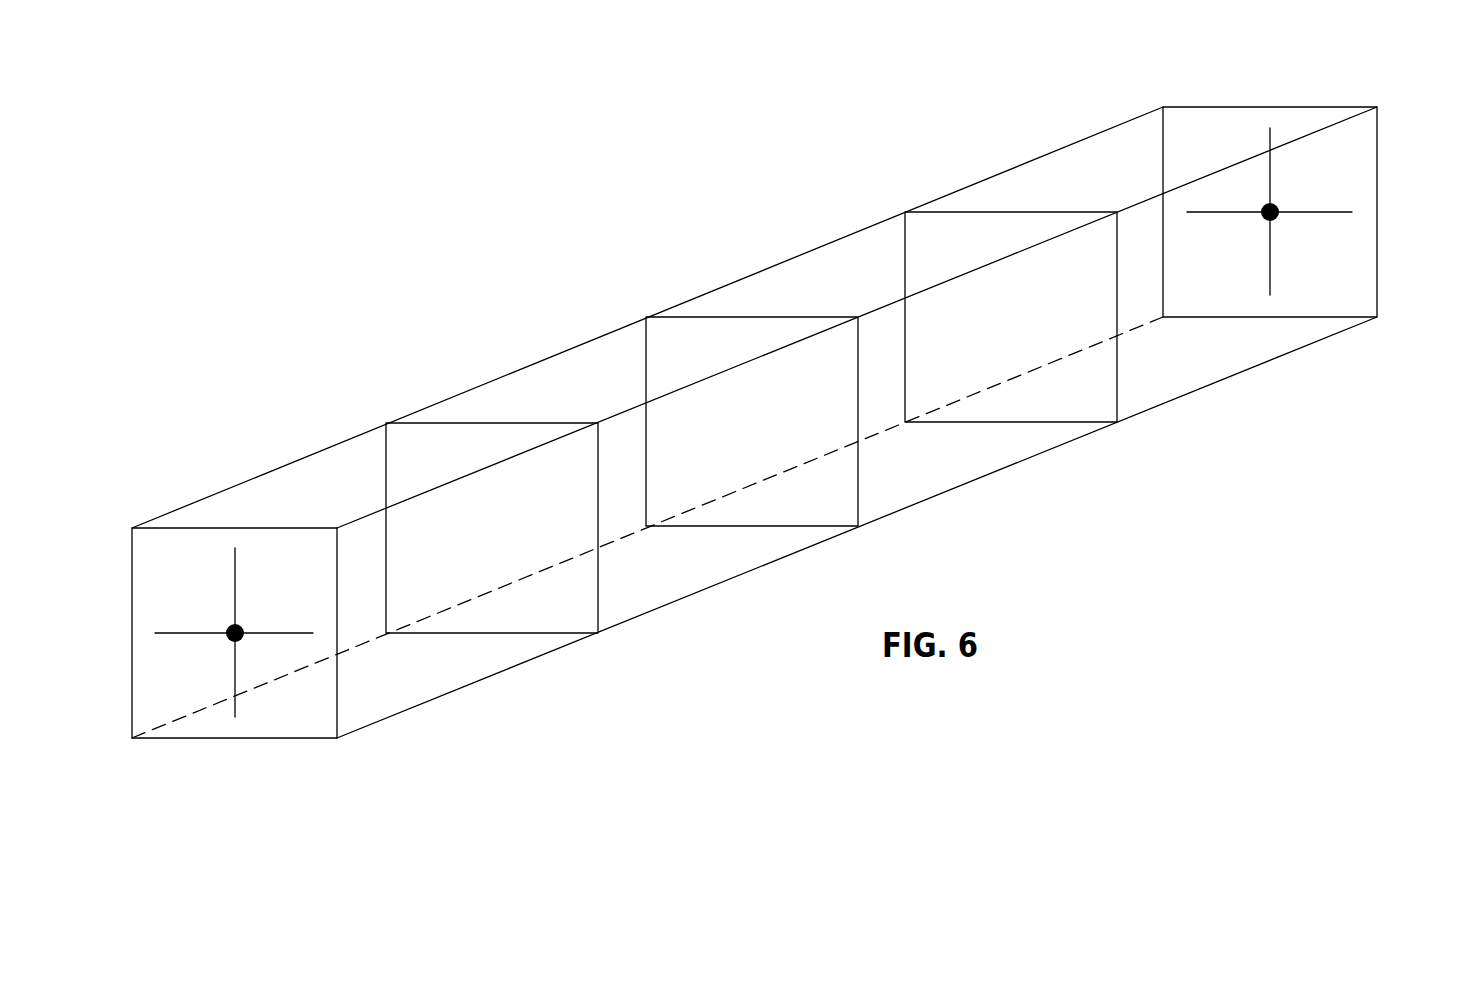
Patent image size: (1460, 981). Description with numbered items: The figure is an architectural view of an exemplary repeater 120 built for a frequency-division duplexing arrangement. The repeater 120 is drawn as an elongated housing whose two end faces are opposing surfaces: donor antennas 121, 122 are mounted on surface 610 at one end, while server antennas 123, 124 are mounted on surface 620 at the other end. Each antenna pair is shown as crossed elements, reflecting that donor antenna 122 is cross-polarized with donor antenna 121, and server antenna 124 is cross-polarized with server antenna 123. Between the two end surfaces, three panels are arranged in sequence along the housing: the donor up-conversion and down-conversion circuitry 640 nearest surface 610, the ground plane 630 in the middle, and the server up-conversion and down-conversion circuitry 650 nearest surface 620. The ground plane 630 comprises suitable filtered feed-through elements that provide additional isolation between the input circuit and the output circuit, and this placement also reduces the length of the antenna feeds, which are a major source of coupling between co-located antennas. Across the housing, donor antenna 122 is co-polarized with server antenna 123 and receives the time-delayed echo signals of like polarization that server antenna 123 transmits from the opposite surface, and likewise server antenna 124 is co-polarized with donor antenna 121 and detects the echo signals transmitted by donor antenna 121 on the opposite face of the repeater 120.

The repeater 120 is at (758, 268).
The donor antenna 121 is at (192, 634).
The donor antenna 122 is at (235, 568).
The server antenna 123 is at (1272, 273).
The server antenna 124 is at (1330, 212).
The surface 610 is at (285, 740).
The surface 620 is at (1272, 106).
The ground plane 630 is at (858, 493).
The donor up-conversion and down-conversion circuitry 640 is at (598, 598).
The server up-conversion and down-conversion circuitry 650 is at (1117, 388).